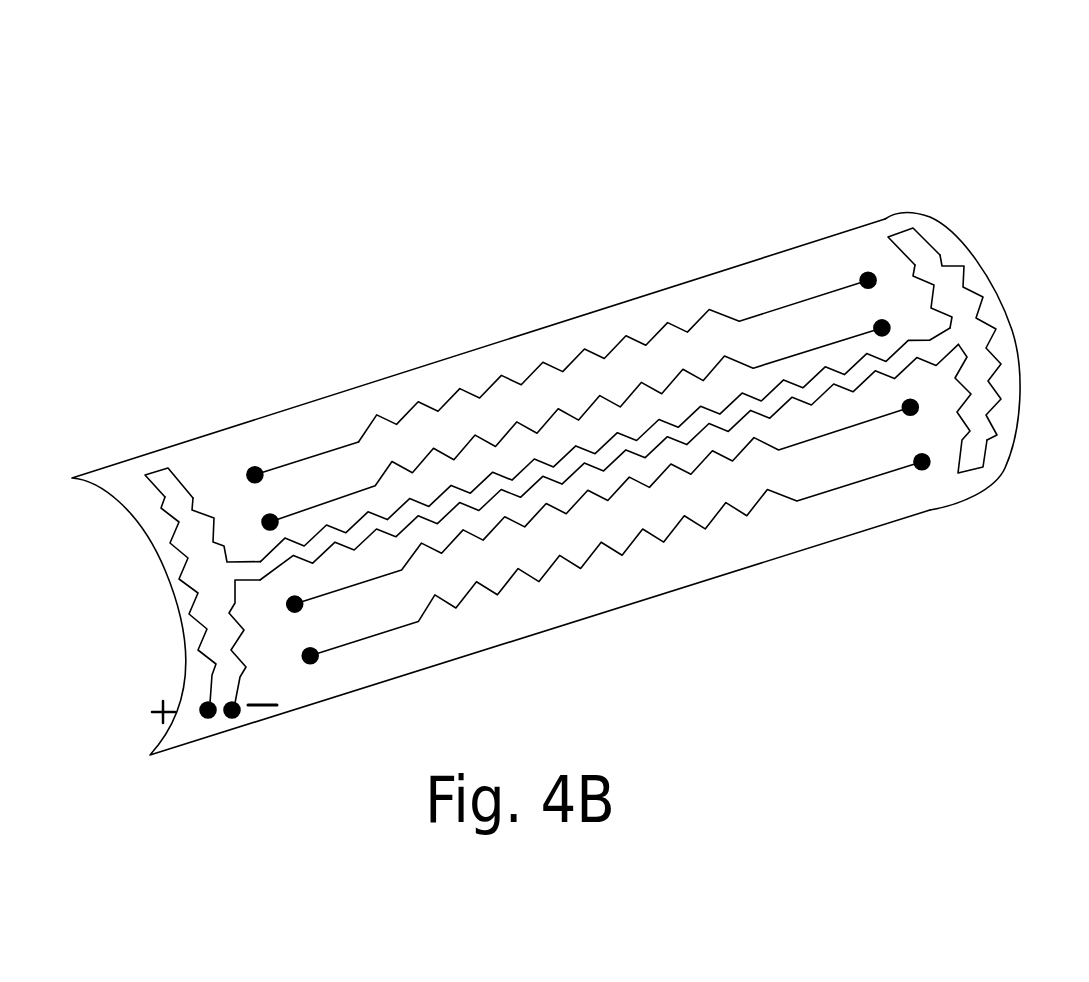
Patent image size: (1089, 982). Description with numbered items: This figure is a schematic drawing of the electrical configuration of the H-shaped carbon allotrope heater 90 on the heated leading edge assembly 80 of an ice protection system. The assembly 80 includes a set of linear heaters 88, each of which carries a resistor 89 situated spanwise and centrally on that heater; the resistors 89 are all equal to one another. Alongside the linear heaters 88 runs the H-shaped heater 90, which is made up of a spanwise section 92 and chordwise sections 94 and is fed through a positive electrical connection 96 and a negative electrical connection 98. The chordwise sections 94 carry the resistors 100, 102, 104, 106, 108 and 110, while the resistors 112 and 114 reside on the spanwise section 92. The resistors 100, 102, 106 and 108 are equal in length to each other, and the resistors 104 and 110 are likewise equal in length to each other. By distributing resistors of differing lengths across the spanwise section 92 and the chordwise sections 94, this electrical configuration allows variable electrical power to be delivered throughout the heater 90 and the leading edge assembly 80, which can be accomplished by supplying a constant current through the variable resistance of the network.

The heated leading edge assembly 80 is at (680, 173).
The linear heaters 88 is at (307, 458).
The resistors 89 is at (500, 375).
The H-shaped heater 90 is at (977, 327).
The spanwise section 92 is at (657, 420).
The chordwise sections 94 is at (160, 490).
The positive electrical connection 96 is at (207, 703).
The negative electrical connection 98 is at (237, 723).
The resistor 100 is at (208, 500).
The resistor 102 is at (245, 665).
The resistor 104 is at (197, 540).
The resistor 106 is at (915, 237).
The resistor 108 is at (958, 435).
The resistor 110 is at (957, 293).
The resistor 112 is at (835, 387).
The resistor 114 is at (787, 383).